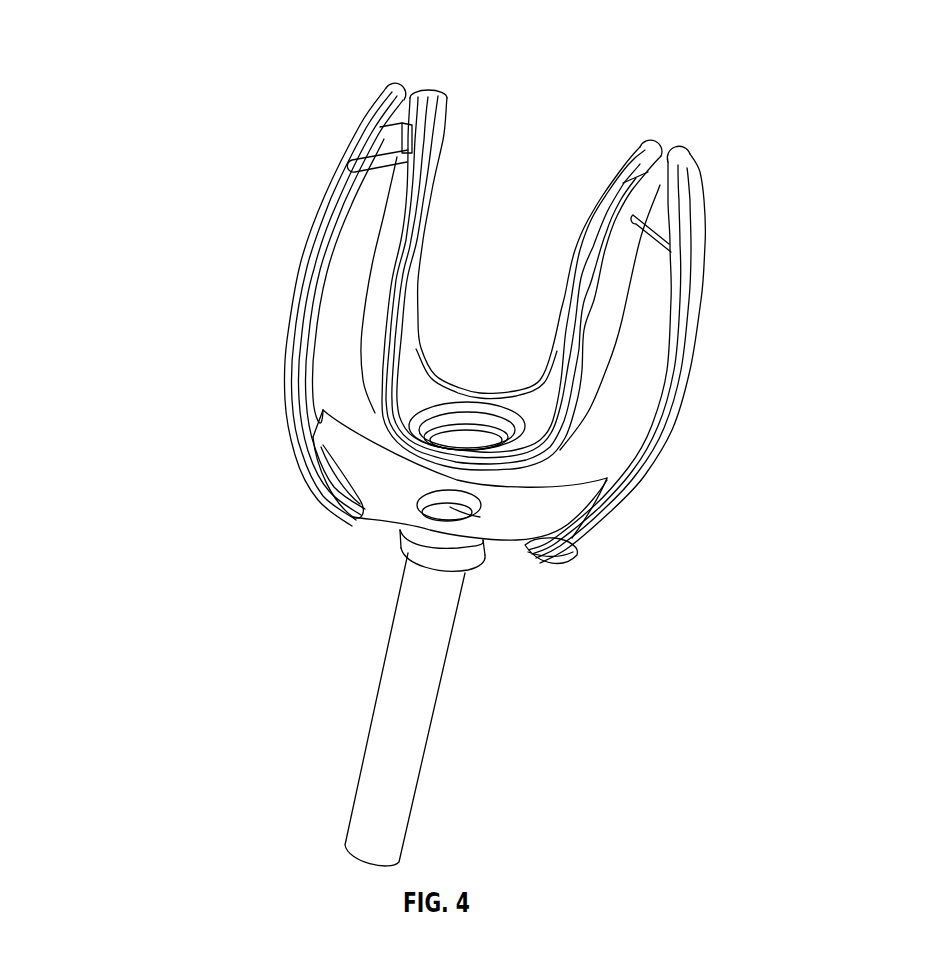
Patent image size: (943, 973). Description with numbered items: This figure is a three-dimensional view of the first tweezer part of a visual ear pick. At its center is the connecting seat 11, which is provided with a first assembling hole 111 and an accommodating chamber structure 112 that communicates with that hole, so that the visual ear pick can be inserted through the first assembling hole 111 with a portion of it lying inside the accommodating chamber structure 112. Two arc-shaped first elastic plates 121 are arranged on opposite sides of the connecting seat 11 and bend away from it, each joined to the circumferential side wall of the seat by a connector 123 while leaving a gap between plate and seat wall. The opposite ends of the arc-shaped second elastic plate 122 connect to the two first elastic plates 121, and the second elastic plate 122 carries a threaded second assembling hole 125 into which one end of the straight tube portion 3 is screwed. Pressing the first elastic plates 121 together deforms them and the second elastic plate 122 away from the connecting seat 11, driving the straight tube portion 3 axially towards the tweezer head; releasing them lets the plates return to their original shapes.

The straight tube portion 3 is at (398, 692).
The connecting seat 11 is at (436, 284).
The first assembling hole 111 is at (468, 440).
The accommodating chamber structure 112 is at (503, 233).
The first elastic plates 121 is at (310, 228).
The second elastic plate 122 is at (370, 472).
The connectors 123 is at (390, 150).
The second assembling hole 125 is at (473, 517).